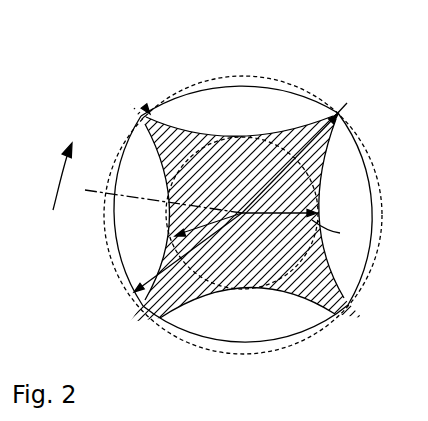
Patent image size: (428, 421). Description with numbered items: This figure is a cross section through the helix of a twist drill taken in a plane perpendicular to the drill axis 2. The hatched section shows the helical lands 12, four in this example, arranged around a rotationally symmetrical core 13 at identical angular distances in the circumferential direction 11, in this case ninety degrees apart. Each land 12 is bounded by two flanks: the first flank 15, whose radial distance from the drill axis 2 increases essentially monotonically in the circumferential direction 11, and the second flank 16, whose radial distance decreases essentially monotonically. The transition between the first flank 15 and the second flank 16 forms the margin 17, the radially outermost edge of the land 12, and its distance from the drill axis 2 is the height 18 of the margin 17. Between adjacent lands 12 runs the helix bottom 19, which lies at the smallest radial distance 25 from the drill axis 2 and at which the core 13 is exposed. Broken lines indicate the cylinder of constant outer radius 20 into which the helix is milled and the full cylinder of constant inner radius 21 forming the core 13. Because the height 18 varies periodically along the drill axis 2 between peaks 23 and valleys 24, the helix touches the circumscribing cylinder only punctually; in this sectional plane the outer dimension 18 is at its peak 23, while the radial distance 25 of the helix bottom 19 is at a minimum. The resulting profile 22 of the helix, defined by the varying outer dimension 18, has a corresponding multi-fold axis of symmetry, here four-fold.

The drill axis 2 is at (154, 193).
The circumferential direction 11 is at (60, 183).
The land 12 is at (157, 128).
The core 13 is at (259, 167).
The first flank 15 is at (146, 150).
The second flank 16 is at (193, 113).
The margin 17 is at (145, 107).
The height of the margin 18 is at (290, 158).
The helix bottom 19 is at (246, 124).
The outer radius 20 is at (175, 240).
The inner radius 21 is at (212, 227).
The profile 22 is at (117, 272).
The peak 23 is at (348, 307).
The valley 24 is at (250, 339).
The radial distance of the helix bottom 25 is at (340, 233).